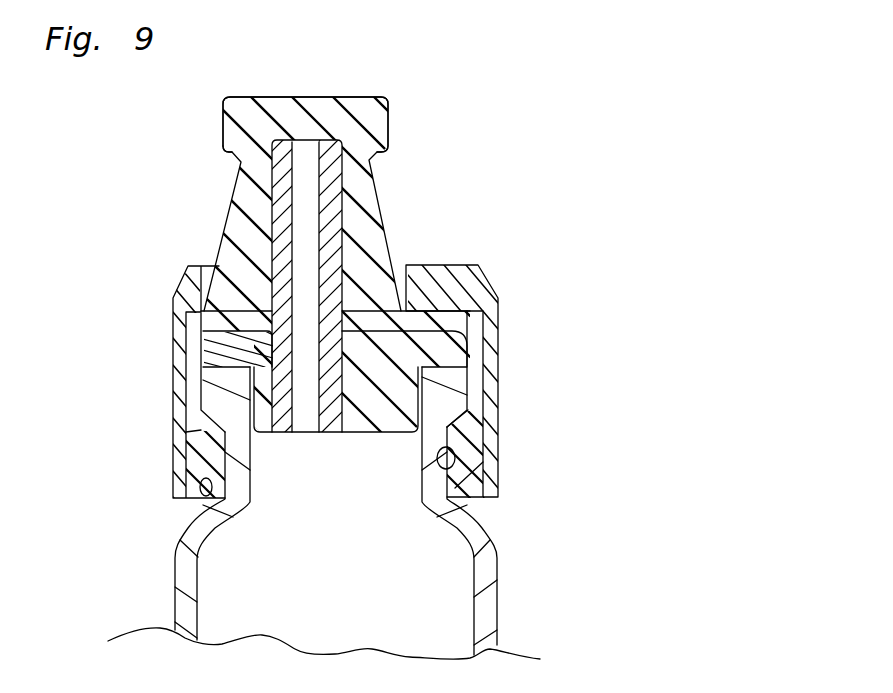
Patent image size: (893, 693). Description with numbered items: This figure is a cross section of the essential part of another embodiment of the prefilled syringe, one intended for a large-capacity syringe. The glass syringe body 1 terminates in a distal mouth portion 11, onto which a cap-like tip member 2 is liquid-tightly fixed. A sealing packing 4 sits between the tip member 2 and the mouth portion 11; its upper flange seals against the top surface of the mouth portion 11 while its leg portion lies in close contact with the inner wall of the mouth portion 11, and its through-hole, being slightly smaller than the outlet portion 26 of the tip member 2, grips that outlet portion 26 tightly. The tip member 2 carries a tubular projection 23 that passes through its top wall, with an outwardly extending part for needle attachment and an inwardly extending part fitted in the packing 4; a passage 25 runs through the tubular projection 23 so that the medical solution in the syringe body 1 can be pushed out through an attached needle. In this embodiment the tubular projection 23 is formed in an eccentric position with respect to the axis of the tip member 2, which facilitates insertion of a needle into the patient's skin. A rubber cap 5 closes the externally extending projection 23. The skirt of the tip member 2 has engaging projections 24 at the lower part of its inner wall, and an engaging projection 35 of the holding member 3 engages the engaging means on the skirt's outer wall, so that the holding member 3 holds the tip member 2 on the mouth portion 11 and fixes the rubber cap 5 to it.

The syringe body 1 is at (500, 583).
The tip member 2 is at (358, 211).
The holding member 3 is at (499, 339).
The packing 4 is at (436, 398).
The rubber cap 5 is at (386, 117).
The mouth portion 11 is at (201, 405).
The tubular projection 23 is at (246, 165).
The engaging projections 24 is at (456, 470).
The passage 25 is at (300, 194).
The outlet portion 26 is at (270, 361).
The engaging projection 35 is at (207, 501).